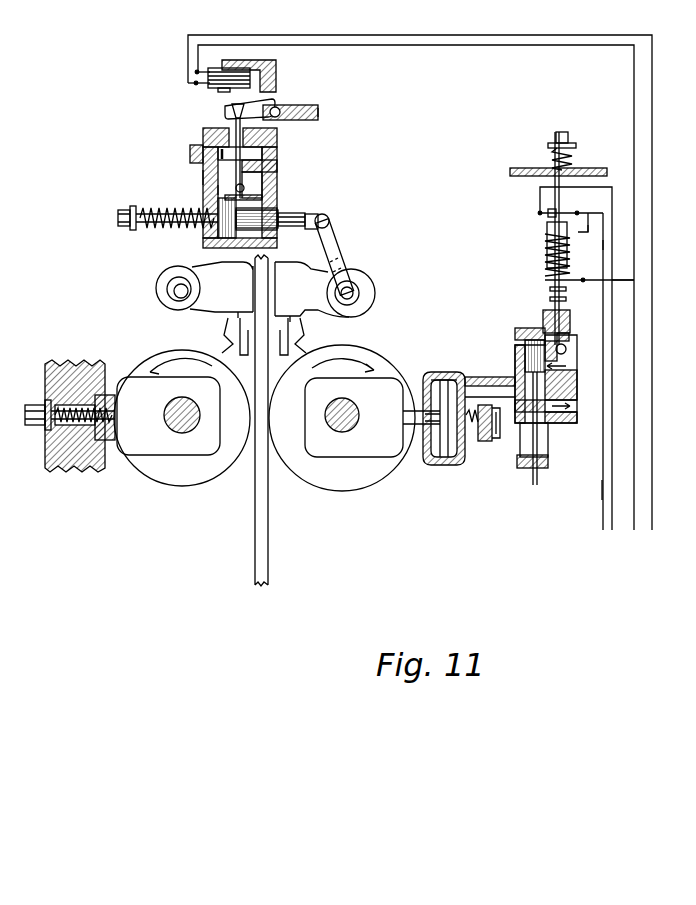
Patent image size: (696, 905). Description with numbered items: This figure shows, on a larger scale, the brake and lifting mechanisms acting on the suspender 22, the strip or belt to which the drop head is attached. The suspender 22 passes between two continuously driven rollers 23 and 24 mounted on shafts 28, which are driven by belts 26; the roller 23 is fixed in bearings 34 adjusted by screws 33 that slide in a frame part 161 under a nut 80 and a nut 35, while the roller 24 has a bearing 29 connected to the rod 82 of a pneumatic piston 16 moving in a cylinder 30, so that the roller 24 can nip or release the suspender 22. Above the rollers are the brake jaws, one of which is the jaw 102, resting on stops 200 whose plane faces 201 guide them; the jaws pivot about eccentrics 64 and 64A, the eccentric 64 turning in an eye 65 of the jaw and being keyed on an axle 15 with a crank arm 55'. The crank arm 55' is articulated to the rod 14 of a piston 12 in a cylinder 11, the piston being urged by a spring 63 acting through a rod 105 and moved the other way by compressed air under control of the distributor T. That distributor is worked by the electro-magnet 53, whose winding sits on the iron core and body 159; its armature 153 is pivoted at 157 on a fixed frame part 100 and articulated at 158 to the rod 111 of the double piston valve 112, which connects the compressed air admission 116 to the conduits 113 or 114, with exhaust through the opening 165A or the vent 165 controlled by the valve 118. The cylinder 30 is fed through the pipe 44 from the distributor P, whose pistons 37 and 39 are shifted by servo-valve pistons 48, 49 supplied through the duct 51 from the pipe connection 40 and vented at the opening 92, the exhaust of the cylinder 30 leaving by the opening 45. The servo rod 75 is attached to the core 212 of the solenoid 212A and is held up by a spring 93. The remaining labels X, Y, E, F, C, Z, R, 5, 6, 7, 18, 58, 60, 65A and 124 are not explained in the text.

The supply wire X is at (476, 35).
The supply wire Y is at (486, 46).
The iron core and body 159 is at (276, 79).
The electro-magnet 53 is at (262, 63).
The armature 153 is at (266, 106).
The pivot 157 is at (296, 104).
The fixed frame part 100 is at (318, 113).
The articulation 158 is at (232, 117).
The needle valve 7 is at (214, 136).
The distributor T is at (217, 192).
The rod 111 is at (278, 140).
The cap 5 is at (278, 151).
The valve 118 is at (281, 150).
The compressed air admission 116 is at (278, 168).
The conduit 113 is at (278, 185).
The exhaust opening 165A is at (278, 194).
The vent 165 is at (198, 153).
The double piston valve 112 is at (207, 179).
The conduit 114 is at (207, 191).
The cylinder 11 is at (210, 237).
The piston 12 is at (280, 227).
The rod 14 is at (303, 215).
The spring 63 is at (155, 211).
The crank arm 55' is at (341, 252).
The eye 65 is at (362, 271).
The eccentric 64 is at (357, 288).
The axle 15 is at (349, 294).
The rod 105 is at (312, 289).
The plane faces 201 is at (296, 316).
The boss 65A is at (160, 276).
The eccentric 64A is at (170, 290).
The jaw 102 is at (226, 287).
The stops 200 is at (240, 340).
The suspender 22 is at (256, 492).
The roller 23 is at (160, 488).
The bearings 34 is at (128, 449).
The shafts 28 is at (177, 429).
The roller 24 is at (352, 484).
The bearing 29 is at (365, 385).
The rod 82 is at (405, 413).
The frame part 161 is at (87, 364).
The nut 35 is at (36, 405).
The screws 33 is at (56, 428).
The nut 80 is at (113, 395).
The pneumatic piston 16 is at (445, 459).
The cylinder 30 is at (448, 374).
The gear 18 is at (478, 446).
The pipe 44 is at (468, 387).
The distributor P is at (555, 379).
The piston 37 is at (518, 379).
The piston 39 is at (520, 345).
The piston 48 is at (572, 319).
The piston 49 is at (570, 335).
The opening 92 is at (572, 343).
The duct 51 is at (575, 353).
The pipe connection 40 is at (568, 371).
The belts 26 is at (570, 399).
The opening 45 is at (578, 421).
The plate 6 is at (566, 428).
The cylinder 58 is at (549, 441).
The nut 60 is at (549, 455).
The return line R is at (595, 490).
The spring 93 is at (575, 153).
The contact 124 is at (569, 213).
The wire E is at (594, 223).
The wire F is at (615, 241).
The core 212 is at (550, 228).
The solenoid 212A is at (547, 251).
The wire C is at (589, 271).
The wire Z is at (623, 271).
The rod 75 is at (567, 299).